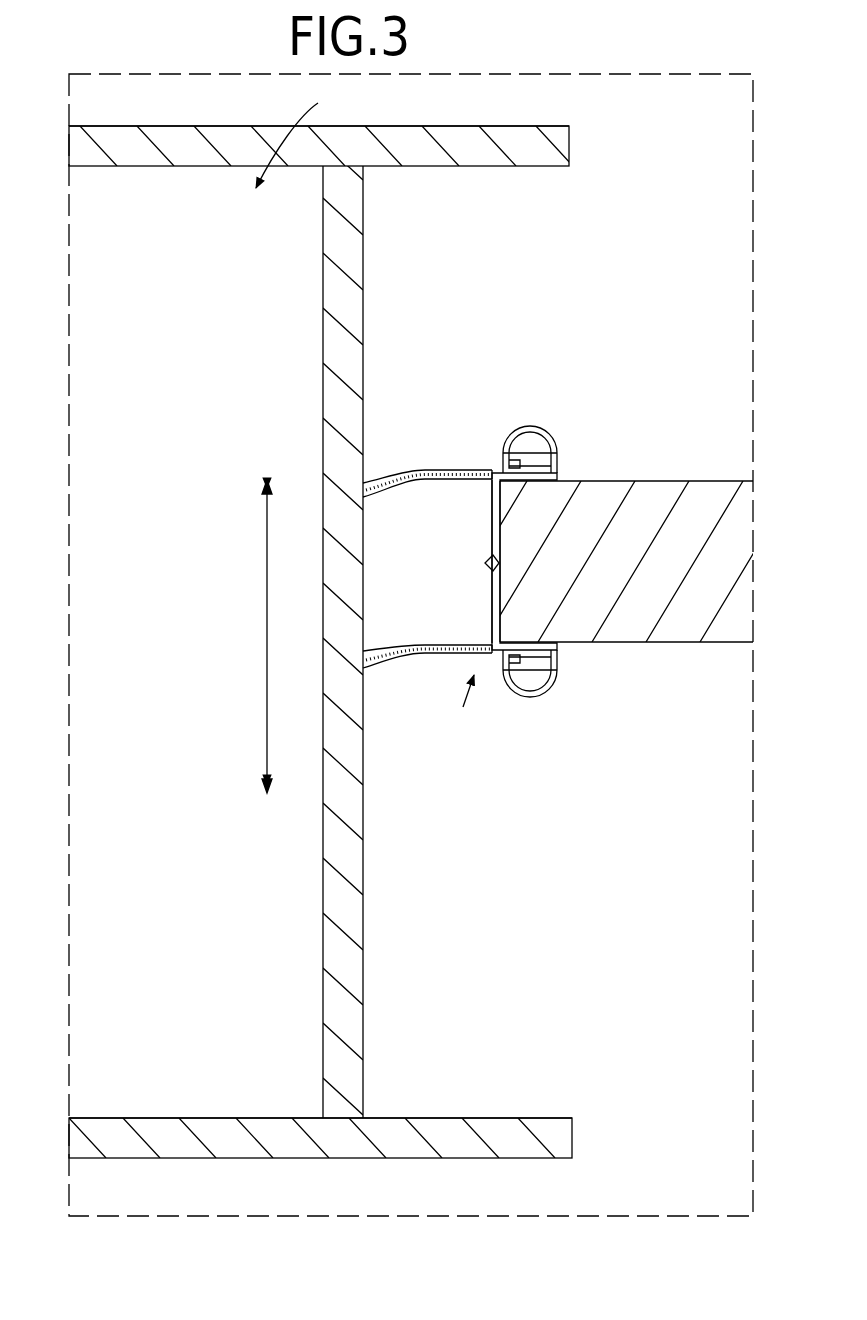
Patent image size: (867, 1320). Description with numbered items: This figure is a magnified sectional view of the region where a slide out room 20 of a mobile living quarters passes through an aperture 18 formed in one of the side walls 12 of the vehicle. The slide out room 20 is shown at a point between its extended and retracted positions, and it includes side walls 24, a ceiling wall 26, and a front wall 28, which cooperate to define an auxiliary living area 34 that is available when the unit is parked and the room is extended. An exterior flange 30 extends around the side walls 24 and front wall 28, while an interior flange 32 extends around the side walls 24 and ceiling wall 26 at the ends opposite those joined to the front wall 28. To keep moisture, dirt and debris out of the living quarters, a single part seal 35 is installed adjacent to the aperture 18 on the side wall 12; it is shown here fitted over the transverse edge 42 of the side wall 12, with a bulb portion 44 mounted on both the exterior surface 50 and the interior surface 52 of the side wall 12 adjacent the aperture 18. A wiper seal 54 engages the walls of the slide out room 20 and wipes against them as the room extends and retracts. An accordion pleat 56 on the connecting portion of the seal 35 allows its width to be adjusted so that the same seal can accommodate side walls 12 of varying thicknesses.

The side wall 12 is at (682, 640).
The aperture 18 is at (382, 440).
The slide out room 20 is at (307, 135).
The side walls 24 is at (357, 880).
The ceiling wall 26 is at (218, 138).
The front wall 28 is at (302, 1153).
The exterior flange 30 is at (488, 1118).
The interior flange 32 is at (470, 126).
The auxiliary living area 34 is at (189, 585).
The seal 35 is at (457, 710).
The transverse edge 42 is at (503, 560).
The bulb portion 44 is at (545, 409).
The exterior surface 50 is at (618, 644).
The interior surface 52 is at (665, 481).
The wiper seal 54 is at (378, 460).
The accordion pleat 56 is at (487, 567).